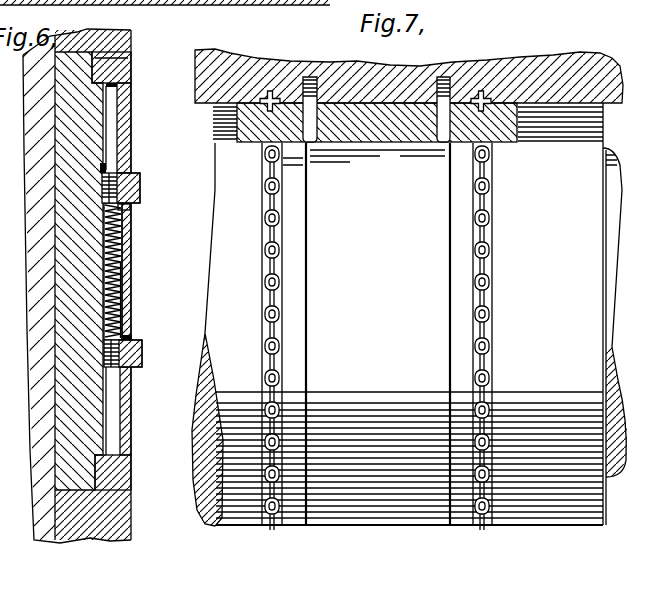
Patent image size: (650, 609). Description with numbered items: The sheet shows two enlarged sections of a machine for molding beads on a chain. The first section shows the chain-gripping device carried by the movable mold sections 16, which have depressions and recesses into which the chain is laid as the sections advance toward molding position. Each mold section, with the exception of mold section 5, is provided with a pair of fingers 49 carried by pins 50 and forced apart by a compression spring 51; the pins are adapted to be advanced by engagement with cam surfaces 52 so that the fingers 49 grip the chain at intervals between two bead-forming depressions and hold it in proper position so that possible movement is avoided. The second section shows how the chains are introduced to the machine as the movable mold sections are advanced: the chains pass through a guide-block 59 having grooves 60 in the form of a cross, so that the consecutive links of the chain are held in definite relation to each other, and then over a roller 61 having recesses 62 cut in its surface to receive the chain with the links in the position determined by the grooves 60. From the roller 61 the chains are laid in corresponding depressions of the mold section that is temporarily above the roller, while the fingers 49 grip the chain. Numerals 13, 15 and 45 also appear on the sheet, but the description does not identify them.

In FIG. 6, the mold section 5 is at (7, 194).
In FIG. 7, the rim 13 is at (229, 1).
In FIG. 7, the rib 15 is at (150, 1).
In FIG. 6, the movable mold sections 16 is at (88, 246).
In FIG. 6, the body 45 is at (7, 343).
In FIG. 6, the fingers 49 is at (157, 353).
In FIG. 6, the pins 50 is at (147, 412).
In FIG. 6, the compression spring 51 is at (120, 268).
In FIG. 6, the cam surfaces 52 is at (147, 472).
In FIG. 7, the guide-block 59 is at (384, 132).
In FIG. 7, the grooves 60 is at (484, 90).
In FIG. 7, the roller 61 is at (537, 515).
In FIG. 7, the recesses 62 is at (520, 190).